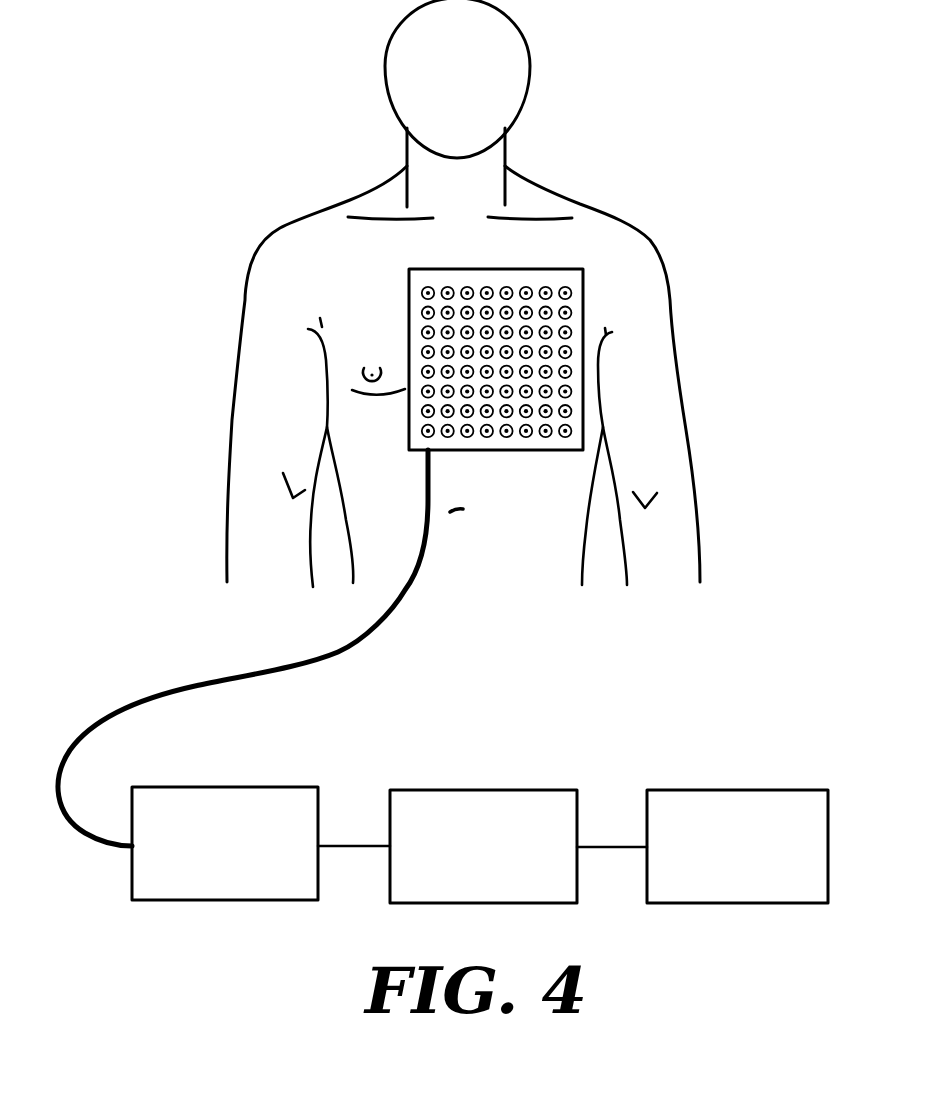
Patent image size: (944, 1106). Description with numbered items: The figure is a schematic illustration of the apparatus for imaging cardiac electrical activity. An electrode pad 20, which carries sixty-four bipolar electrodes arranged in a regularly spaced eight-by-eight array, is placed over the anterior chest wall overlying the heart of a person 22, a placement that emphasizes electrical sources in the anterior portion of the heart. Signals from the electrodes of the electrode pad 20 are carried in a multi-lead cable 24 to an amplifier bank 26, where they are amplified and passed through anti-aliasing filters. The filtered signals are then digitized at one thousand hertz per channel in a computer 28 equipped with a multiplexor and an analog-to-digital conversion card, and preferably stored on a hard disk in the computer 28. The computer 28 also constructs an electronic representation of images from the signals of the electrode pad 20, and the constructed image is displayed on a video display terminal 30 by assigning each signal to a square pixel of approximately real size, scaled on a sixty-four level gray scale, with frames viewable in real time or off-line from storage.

The electrode pad 20 is at (585, 297).
The person 22 is at (620, 217).
The multi-lead cable 24 is at (192, 683).
The amplifier bank 26 is at (231, 787).
The computer 28 is at (496, 790).
The video display terminal 30 is at (729, 790).